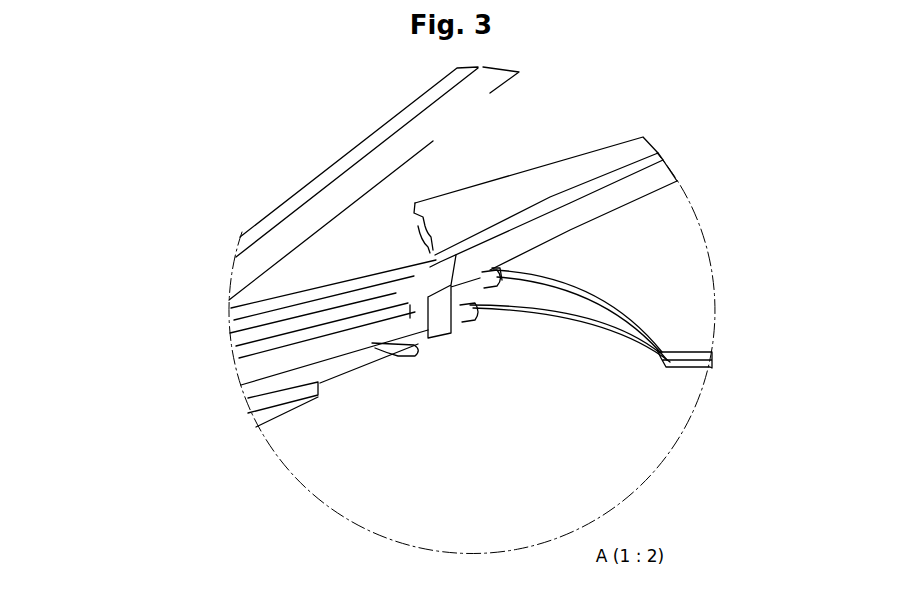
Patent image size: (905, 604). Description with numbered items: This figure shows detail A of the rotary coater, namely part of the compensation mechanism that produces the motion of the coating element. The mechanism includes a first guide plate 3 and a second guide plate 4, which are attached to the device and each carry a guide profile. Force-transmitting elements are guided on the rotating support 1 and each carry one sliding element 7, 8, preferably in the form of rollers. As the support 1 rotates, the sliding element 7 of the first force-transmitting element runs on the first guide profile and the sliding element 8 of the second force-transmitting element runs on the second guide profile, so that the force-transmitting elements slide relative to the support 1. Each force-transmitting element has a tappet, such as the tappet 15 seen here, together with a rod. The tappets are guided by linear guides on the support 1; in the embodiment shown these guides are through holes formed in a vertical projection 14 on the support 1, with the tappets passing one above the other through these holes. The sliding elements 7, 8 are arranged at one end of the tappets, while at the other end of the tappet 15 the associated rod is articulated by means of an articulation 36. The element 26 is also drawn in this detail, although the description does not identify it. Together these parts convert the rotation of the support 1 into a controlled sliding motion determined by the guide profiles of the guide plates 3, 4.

The support 1 is at (562, 215).
The first guide plate 3 is at (537, 297).
The second guide plate 4 is at (685, 302).
The sliding element 7 is at (469, 323).
The sliding element 8 is at (497, 280).
The vertical projection 14 is at (445, 320).
The tappet 15 is at (468, 282).
The profile rail 26 is at (371, 344).
The articulation 36 is at (410, 358).